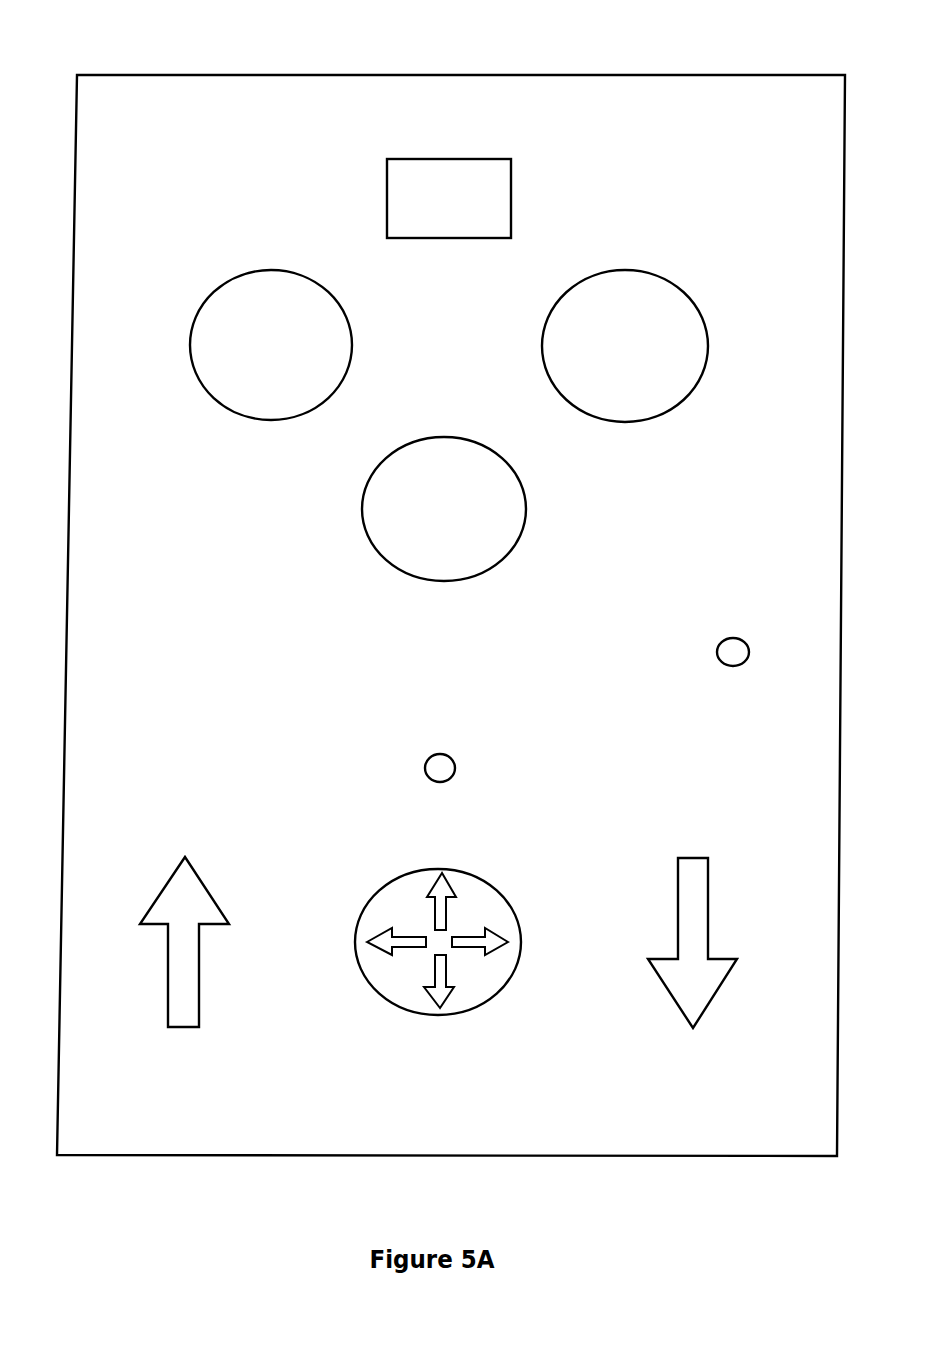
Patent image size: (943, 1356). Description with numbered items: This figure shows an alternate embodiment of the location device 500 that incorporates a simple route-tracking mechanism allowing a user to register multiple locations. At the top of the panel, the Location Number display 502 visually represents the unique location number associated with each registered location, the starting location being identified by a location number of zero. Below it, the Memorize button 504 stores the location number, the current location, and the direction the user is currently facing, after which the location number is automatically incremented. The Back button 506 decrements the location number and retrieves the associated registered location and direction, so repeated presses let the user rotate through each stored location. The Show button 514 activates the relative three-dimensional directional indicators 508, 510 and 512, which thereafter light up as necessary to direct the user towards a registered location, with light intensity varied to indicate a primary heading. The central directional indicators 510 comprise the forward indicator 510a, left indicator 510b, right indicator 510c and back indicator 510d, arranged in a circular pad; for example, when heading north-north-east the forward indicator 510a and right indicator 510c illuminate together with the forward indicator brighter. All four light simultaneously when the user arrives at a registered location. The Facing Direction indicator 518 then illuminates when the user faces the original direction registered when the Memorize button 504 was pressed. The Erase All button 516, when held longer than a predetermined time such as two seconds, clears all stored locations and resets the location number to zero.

The user interface panel 500 is at (427, 75).
The Location Number display 502 is at (467, 238).
The Memorize button 504 is at (255, 270).
The Back button 506 is at (653, 277).
The directional indicator 508 is at (198, 870).
The directional indicators 510 is at (443, 981).
The forward directional indicator 510a is at (447, 868).
The left directional indicator 510b is at (375, 950).
The right directional indicator 510c is at (500, 922).
The back directional indicator 510d is at (427, 997).
The directional indicator 512 is at (708, 880).
The Show button 514 is at (433, 435).
The Erase All button 516 is at (728, 672).
The Facing Direction indicator 518 is at (418, 778).